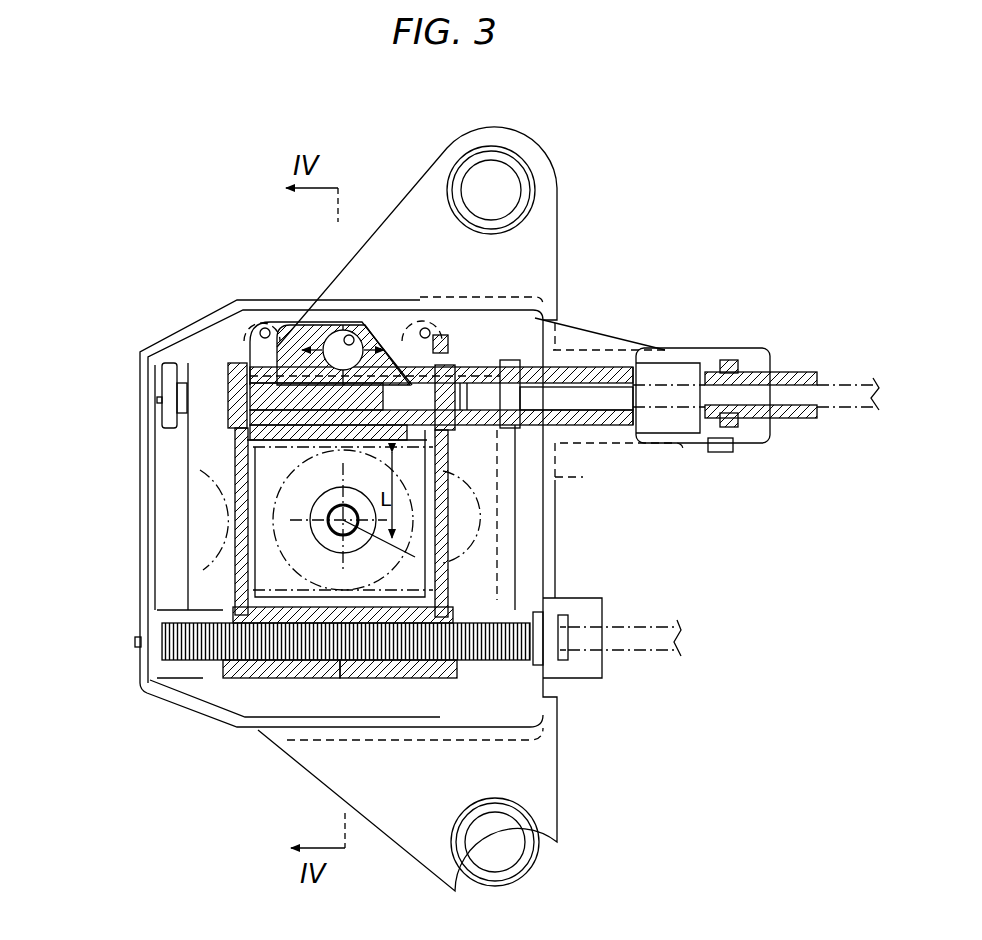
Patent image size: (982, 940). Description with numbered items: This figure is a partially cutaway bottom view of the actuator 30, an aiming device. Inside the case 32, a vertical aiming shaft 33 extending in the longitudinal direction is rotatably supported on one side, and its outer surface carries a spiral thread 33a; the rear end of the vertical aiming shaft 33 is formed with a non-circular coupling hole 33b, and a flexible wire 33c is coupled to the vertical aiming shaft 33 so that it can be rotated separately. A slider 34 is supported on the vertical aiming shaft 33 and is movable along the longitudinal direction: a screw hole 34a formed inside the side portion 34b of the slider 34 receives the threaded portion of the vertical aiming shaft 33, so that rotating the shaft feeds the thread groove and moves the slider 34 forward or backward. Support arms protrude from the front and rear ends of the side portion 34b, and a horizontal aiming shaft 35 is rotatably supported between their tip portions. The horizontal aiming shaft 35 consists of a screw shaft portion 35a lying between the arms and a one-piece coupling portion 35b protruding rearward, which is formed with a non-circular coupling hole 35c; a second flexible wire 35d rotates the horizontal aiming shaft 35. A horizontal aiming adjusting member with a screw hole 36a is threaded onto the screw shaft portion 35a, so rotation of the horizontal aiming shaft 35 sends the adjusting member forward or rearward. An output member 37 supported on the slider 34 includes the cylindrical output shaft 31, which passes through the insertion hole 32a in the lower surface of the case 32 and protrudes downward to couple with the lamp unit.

The actuator 30 is at (200, 753).
The output shaft 31 is at (283, 557).
The case 32 is at (143, 530).
The insertion hole 32a is at (205, 492).
The vertical aiming shaft 33 is at (493, 620).
The spiral thread 33a is at (205, 652).
The coupling hole 33b is at (568, 640).
The flexible wire 33c is at (647, 620).
The slider 34 is at (408, 670).
The screw hole 34a is at (342, 660).
The side portion 34b is at (277, 673).
The horizontal aiming shaft 35 is at (607, 375).
The screw shaft portion 35a is at (272, 355).
The coupling portion 35b is at (590, 413).
The coupling hole 35c is at (650, 387).
The flexible wire 35d is at (852, 380).
The screw hole 36a is at (290, 443).
The output member 37 is at (263, 548).